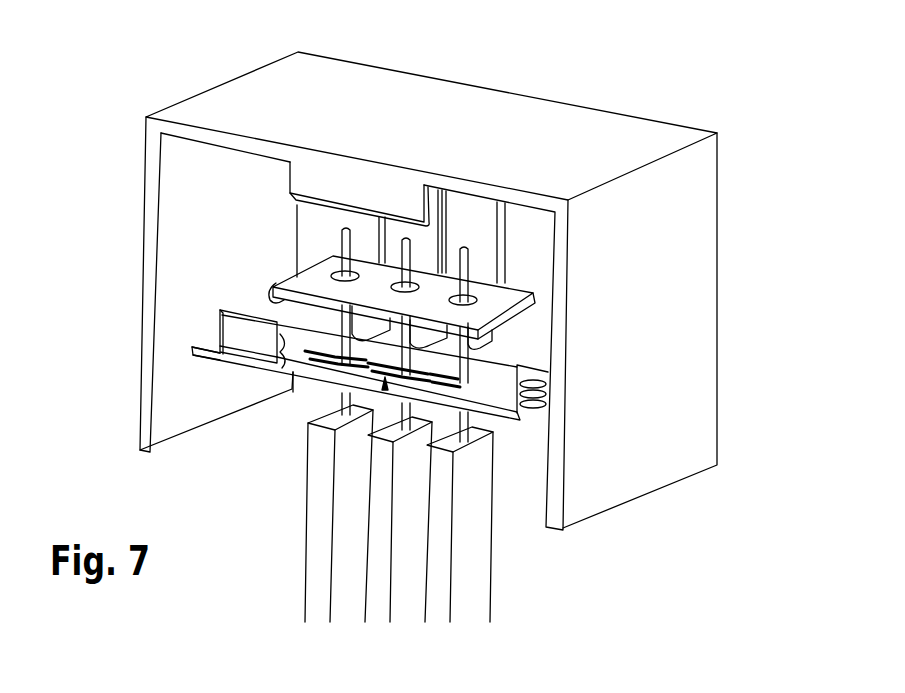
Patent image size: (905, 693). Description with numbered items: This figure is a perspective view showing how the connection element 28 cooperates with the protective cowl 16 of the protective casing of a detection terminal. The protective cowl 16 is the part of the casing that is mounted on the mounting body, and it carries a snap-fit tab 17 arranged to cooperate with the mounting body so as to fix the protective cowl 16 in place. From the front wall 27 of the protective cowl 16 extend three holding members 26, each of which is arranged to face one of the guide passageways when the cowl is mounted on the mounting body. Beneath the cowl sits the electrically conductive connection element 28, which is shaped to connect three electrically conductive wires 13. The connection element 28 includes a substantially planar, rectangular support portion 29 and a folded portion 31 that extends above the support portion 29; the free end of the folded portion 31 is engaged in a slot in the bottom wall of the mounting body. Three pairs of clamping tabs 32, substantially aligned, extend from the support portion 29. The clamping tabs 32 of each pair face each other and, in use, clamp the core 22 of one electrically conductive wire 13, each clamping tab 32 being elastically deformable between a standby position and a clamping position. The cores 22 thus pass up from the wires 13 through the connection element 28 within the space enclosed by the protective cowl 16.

The electrically conductive wire 13 is at (433, 547).
The protective cowl 16 is at (690, 210).
The snap-fit tab 17 is at (322, 183).
The core 22 is at (407, 240).
The holding member 26 is at (473, 357).
The front wall 27 is at (521, 235).
The connection element 28 is at (254, 334).
The support portion 29 is at (300, 333).
The folded portion 31 is at (496, 298).
The clamping tab 32 is at (326, 361).